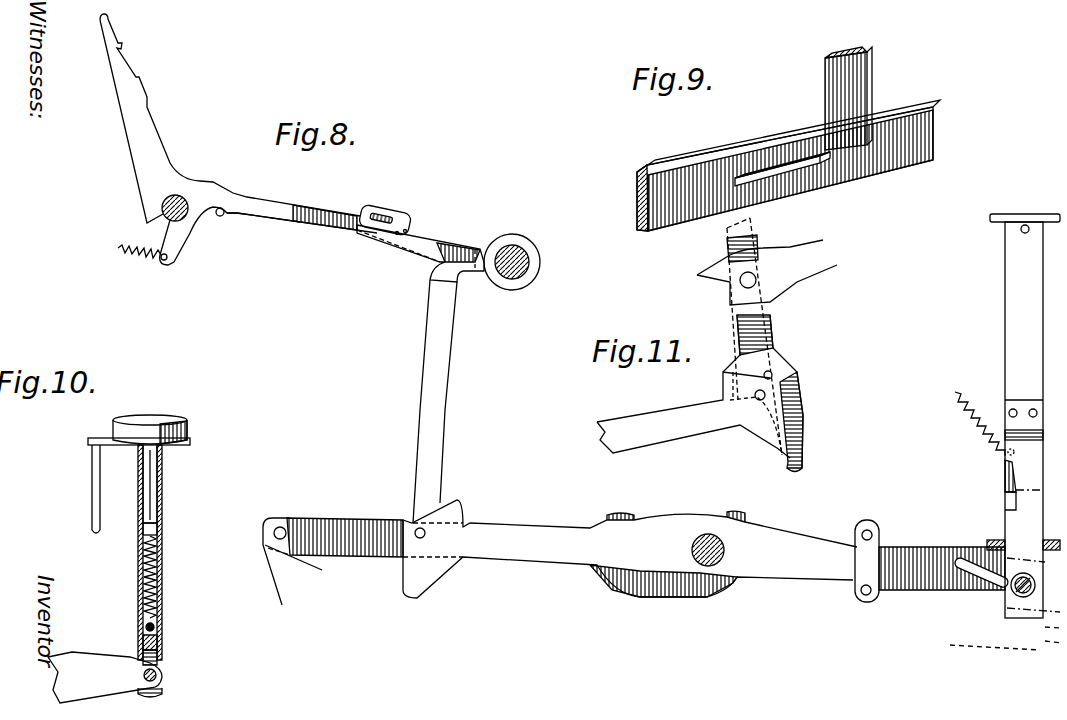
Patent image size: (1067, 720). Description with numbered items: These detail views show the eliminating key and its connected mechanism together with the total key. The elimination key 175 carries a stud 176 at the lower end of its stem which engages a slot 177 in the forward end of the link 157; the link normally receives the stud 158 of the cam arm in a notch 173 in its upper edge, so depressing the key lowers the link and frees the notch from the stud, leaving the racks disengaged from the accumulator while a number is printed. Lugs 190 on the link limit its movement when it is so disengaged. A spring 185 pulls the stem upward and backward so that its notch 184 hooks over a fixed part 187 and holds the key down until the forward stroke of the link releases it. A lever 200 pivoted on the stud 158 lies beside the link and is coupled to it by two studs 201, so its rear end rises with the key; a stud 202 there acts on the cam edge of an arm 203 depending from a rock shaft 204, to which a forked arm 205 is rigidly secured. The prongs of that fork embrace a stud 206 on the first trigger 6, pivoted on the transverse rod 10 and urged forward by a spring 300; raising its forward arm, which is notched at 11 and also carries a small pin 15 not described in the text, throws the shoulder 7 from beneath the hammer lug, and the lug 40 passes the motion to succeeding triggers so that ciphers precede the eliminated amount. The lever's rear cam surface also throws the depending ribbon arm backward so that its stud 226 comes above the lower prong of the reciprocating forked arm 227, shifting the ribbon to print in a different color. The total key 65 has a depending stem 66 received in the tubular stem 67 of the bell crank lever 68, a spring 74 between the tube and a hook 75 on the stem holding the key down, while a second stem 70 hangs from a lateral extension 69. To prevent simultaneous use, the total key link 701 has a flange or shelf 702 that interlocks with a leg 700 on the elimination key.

In FIG. 8, the trigger 6 is at (238, 139).
In FIG. 8, the shoulder 7 is at (123, 48).
In FIG. 8, the lug 40 is at (141, 82).
In FIG. 8, the transverse rod 10 is at (181, 220).
In FIG. 8, the pin 15 is at (221, 216).
In FIG. 8, the notch 11 is at (236, 215).
In FIG. 8, the spring 300 is at (136, 262).
In FIG. 8, the stud 206 is at (382, 214).
In FIG. 8, the forked arm 205 is at (433, 243).
In FIG. 8, the rock shaft 204 is at (514, 258).
In FIG. 8, the arm 203 is at (440, 398).
In FIG. 8, the link 157 is at (355, 528).
In FIG. 8, the stud 158 is at (292, 561).
In FIG. 8, the stud 202 is at (425, 536).
In FIG. 11, the stud 202 is at (760, 400).
In FIG. 8, the lugs 190 is at (636, 515).
In FIG. 8, the lever 200 is at (731, 516).
In FIG. 8, the notch 173 is at (707, 534).
In FIG. 8, the studs 201 is at (872, 587).
In FIG. 8, the slot 177 is at (975, 571).
In FIG. 8, the stud 176 is at (1012, 594).
In FIG. 8, the elimination key 175 is at (1020, 220).
In FIG. 8, the notch 184 is at (1008, 492).
In FIG. 8, the spring 185 is at (968, 420).
In FIG. 8, the fixed part 187 is at (990, 545).
In FIG. 9, the leg 700 is at (860, 82).
In FIG. 9, the total key link 701 is at (750, 150).
In FIG. 9, the flange or shelf 702 is at (790, 180).
In FIG. 11, the arm 227 is at (767, 336).
In FIG. 11, the stud 226 is at (741, 283).
In FIG. 10, the total key 65 is at (182, 420).
In FIG. 10, the lateral extension 69 is at (118, 447).
In FIG. 10, the second depending stem 70 is at (92, 480).
In FIG. 10, the depending stem 66 is at (150, 478).
In FIG. 10, the tubular stem 67 is at (159, 530).
In FIG. 10, the hook 75 is at (143, 534).
In FIG. 10, the spring 74 is at (160, 572).
In FIG. 10, the bell crank lever 68 is at (105, 677).